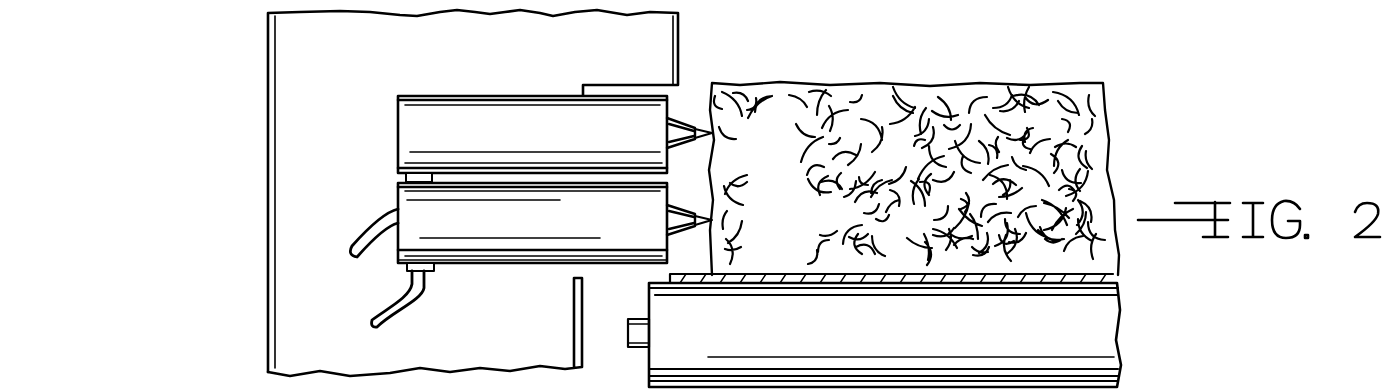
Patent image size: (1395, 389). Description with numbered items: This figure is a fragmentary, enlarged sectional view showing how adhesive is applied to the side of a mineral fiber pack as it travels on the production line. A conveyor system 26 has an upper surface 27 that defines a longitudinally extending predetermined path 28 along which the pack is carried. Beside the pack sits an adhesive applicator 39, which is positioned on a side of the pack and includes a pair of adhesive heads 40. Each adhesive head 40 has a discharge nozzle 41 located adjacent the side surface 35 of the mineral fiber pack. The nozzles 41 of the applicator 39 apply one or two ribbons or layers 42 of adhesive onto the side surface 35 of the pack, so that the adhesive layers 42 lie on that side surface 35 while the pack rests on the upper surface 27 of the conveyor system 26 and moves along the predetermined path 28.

The conveyor system 26 is at (1128, 303).
The upper surface 27 is at (795, 261).
The predetermined path 28 is at (884, 259).
The side surface 35 is at (711, 126).
The adhesive applicator 39 is at (267, 113).
The adhesive heads 40 is at (487, 96).
The discharge nozzles 41 is at (680, 146).
The ribbons or layers of adhesive 42 is at (712, 132).